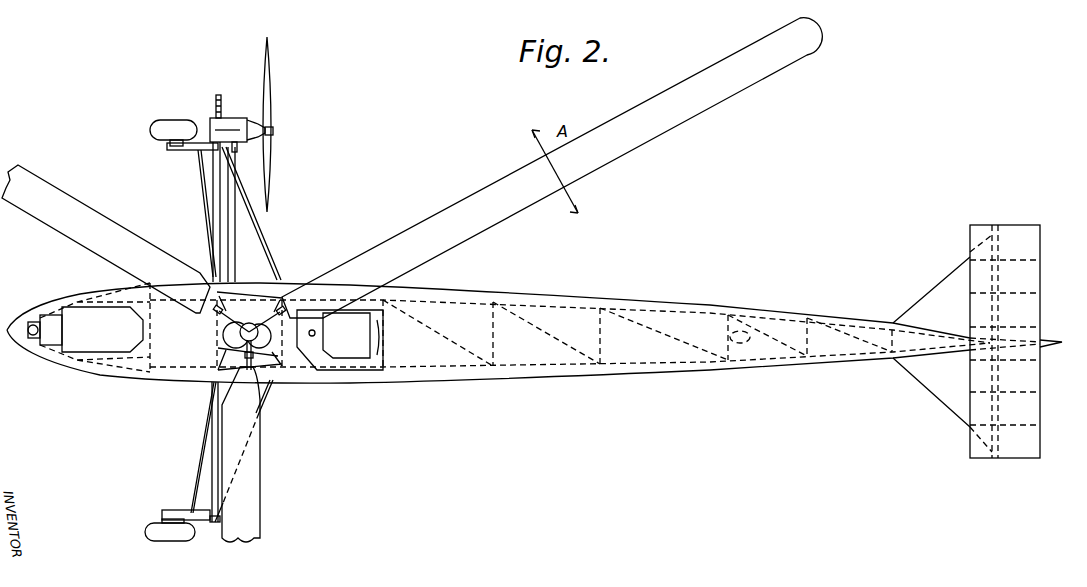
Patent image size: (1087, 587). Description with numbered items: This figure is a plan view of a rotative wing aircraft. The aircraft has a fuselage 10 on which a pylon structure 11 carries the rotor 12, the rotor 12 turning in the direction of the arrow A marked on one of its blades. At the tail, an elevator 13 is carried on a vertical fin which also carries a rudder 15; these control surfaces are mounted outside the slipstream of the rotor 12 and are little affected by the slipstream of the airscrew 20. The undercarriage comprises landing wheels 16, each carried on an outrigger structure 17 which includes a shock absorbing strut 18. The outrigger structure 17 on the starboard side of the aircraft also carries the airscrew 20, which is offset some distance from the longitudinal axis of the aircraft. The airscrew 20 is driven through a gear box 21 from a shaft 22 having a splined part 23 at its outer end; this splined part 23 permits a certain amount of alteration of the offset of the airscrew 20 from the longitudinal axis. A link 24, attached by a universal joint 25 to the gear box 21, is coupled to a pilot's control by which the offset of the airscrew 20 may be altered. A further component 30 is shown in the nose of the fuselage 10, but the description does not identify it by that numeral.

The fuselage 10 is at (567, 322).
The pylon structure 11 is at (258, 366).
The rotor 12 is at (258, 322).
The elevator 13 is at (1021, 240).
The rudder 15 is at (1042, 346).
The landing wheels 16 is at (175, 128).
The outrigger structure 17 is at (208, 224).
The shock absorbing strut 18 is at (200, 149).
The airscrew 20 is at (270, 80).
The gear box 21 is at (234, 128).
The shaft 22 is at (218, 182).
The splined part 23 is at (218, 95).
The link 24 is at (232, 232).
The universal joint 25 is at (238, 148).
The engine 30 is at (118, 322).